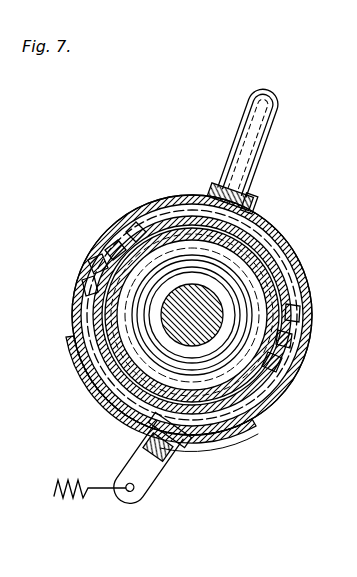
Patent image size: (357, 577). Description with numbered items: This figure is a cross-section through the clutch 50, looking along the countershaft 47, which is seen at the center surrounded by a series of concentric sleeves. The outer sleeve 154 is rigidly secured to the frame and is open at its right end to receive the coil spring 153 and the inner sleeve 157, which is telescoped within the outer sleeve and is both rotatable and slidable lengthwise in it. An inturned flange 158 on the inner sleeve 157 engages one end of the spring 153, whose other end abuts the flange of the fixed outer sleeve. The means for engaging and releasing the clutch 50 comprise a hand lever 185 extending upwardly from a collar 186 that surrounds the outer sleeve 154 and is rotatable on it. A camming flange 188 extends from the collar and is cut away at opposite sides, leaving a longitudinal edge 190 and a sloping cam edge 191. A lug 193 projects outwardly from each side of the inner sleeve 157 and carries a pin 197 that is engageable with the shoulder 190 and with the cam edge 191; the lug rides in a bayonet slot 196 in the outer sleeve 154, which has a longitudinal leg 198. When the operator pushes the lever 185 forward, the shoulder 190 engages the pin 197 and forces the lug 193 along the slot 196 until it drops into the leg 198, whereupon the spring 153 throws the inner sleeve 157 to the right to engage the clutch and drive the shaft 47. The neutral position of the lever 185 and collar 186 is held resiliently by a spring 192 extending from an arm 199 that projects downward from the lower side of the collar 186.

The clutch 50 is at (150, 156).
The countershaft 47 is at (190, 316).
The coil spring 153 is at (122, 384).
The outer sleeve 154 is at (256, 420).
The inner sleeve 157 is at (276, 278).
The inturned flange 158 is at (256, 257).
The hand lever 185 is at (262, 102).
The collar 186 is at (218, 190).
The camming flange 188 is at (252, 216).
The longitudinal edge 190 is at (138, 212).
The sloping cam edge 191 is at (178, 200).
The spring 192 is at (80, 500).
The lug 193 is at (106, 244).
The bayonet slot 196 is at (128, 228).
The pin 197 is at (94, 256).
The longitudinal leg 198 is at (82, 286).
The arm 199 is at (148, 470).